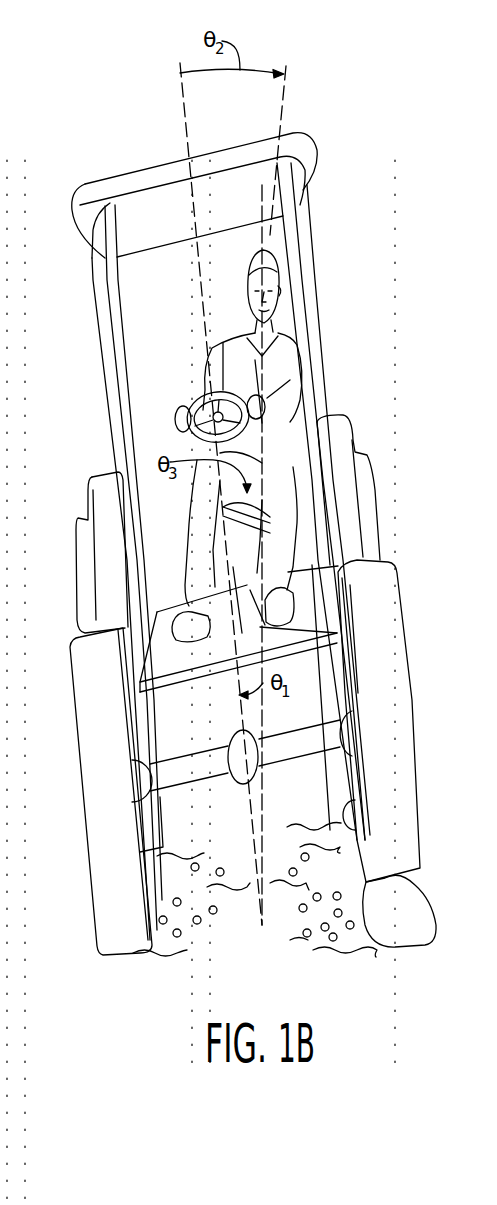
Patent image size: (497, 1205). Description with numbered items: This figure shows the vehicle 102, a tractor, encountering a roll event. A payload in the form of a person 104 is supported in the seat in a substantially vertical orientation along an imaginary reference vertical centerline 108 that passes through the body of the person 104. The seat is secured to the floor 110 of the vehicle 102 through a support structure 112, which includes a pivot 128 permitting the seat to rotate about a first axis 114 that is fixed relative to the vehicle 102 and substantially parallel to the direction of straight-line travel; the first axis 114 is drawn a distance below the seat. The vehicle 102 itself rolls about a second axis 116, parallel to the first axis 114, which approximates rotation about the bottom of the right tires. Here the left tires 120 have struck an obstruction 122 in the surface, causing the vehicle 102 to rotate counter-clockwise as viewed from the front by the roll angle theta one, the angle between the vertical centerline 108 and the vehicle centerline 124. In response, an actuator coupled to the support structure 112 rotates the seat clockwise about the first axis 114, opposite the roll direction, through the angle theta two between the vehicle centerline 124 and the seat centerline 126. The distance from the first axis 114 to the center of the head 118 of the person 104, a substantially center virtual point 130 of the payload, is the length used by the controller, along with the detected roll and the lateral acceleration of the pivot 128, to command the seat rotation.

The vehicle 102 is at (84, 184).
The person 104 is at (236, 332).
The vertical centerline 108 is at (262, 193).
The floor 110 is at (163, 653).
The support structure 112 is at (218, 563).
The first axis 114 is at (235, 652).
The second axis 116 is at (268, 941).
The head 118 is at (259, 260).
The left tires 120 is at (372, 482).
The obstruction 122 is at (327, 812).
The vehicle centerline 124 is at (179, 100).
The seat centerline 126 is at (286, 85).
The pivot 128 is at (265, 612).
The center virtual point 130 is at (273, 304).